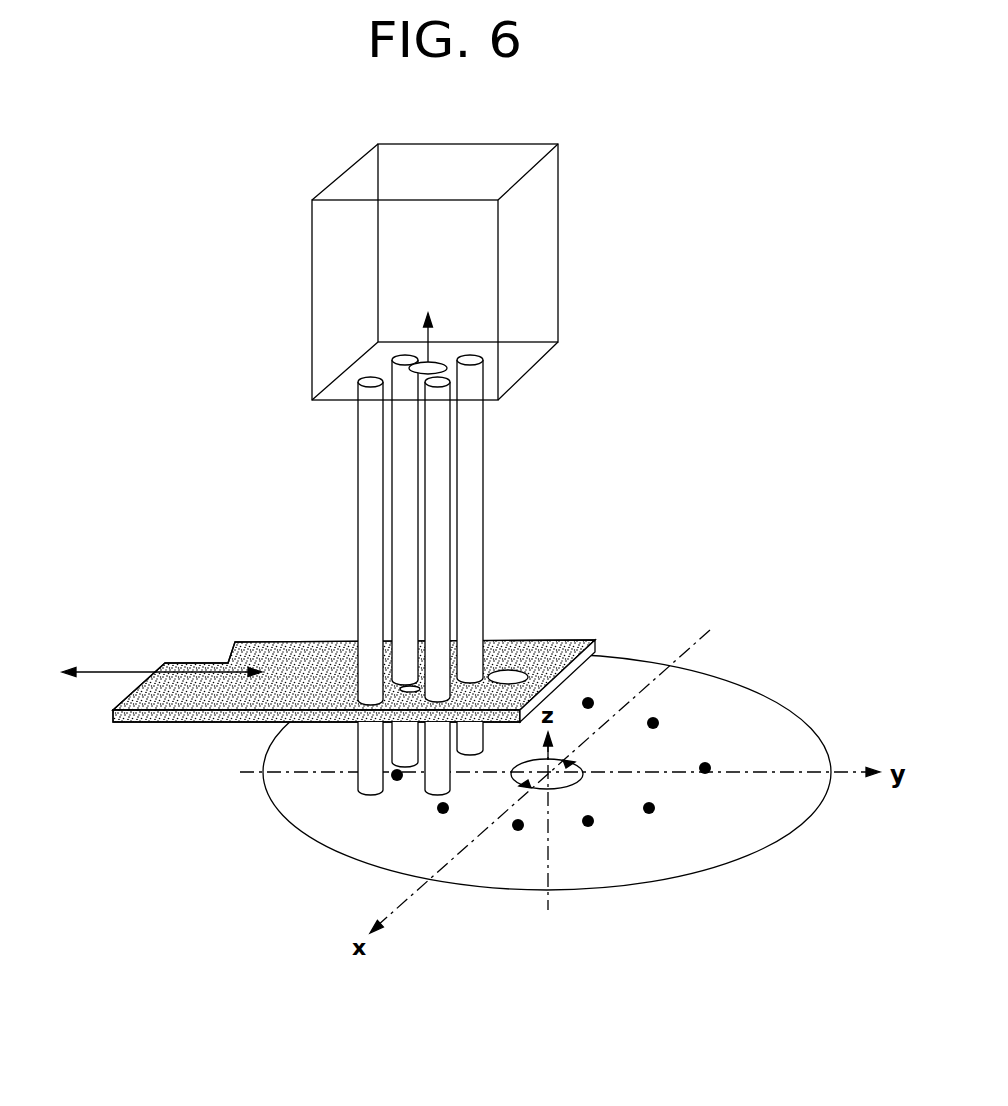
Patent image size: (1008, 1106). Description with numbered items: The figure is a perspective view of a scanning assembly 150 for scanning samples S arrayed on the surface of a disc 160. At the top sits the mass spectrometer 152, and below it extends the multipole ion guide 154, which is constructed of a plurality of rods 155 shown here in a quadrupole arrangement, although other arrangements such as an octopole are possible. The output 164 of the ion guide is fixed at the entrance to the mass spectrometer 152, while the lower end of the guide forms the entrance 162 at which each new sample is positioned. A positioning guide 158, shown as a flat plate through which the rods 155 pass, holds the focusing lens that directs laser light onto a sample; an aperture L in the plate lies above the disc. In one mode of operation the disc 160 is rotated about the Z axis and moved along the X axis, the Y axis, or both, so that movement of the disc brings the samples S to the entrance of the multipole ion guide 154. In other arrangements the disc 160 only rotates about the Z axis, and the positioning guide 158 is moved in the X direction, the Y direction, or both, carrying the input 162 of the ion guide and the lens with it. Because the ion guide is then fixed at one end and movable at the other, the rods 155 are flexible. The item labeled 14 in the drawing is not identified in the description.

The substrate/disk 14 is at (760, 715).
The scanning assembly 150 is at (494, 520).
The mass spectrometer 152 is at (336, 162).
The multipole ion guide 154 is at (346, 416).
The rods 155 is at (483, 458).
The positioning guide 158 is at (113, 718).
The disc 160 is at (760, 818).
The entrance of the multipole ion guide 162 is at (396, 792).
The output of the ion guide 164 is at (445, 366).
The light aperture L is at (514, 663).
The samples S is at (660, 822).